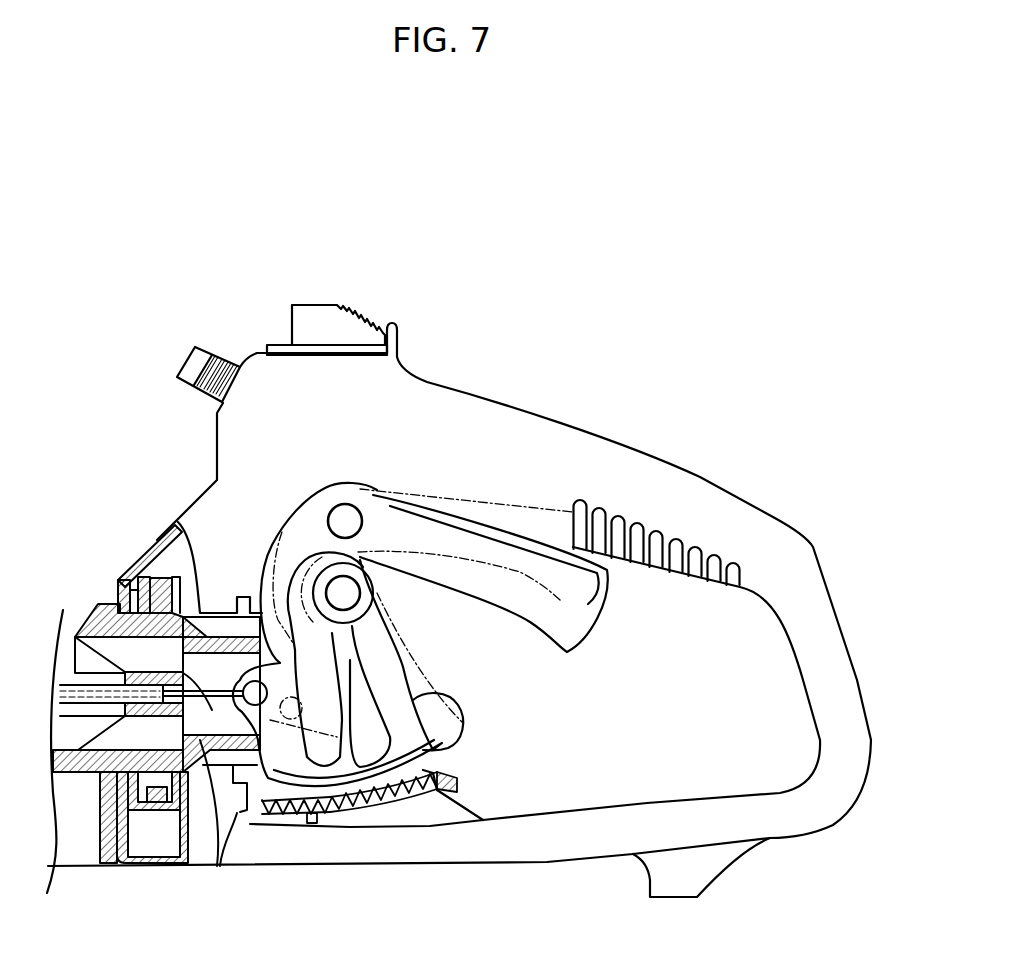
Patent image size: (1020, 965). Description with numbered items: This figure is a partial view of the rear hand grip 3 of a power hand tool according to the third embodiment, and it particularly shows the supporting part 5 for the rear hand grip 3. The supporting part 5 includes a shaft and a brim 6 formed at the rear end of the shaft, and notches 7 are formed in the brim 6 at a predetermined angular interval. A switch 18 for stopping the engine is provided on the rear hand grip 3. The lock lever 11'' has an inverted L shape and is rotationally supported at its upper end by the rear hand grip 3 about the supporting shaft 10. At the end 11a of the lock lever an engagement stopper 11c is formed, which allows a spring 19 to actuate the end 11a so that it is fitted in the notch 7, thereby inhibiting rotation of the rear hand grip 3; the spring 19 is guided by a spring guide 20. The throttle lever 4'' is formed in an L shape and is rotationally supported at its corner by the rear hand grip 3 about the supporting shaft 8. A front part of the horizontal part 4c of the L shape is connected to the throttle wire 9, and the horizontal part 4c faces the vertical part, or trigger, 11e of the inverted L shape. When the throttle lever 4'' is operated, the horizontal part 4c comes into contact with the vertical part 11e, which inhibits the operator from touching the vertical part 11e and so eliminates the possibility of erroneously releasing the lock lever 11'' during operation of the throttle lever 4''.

The rear hand grip 3 is at (771, 517).
The switch 18 is at (313, 308).
The supporting shaft 8 is at (347, 517).
The supporting shaft 10 is at (347, 593).
The brim 6 is at (210, 540).
The supporting part 5 is at (97, 604).
The throttle wire 9 is at (123, 671).
The throttle lever 4'' is at (510, 571).
The lock lever 11'' is at (378, 634).
The horizontal part 4c is at (425, 712).
The vertical part (trigger) 11e is at (417, 734).
The notch 7 is at (203, 765).
The end 11a is at (217, 866).
The engagement stopper 11c is at (243, 810).
The spring 19 is at (293, 800).
The spring guide 20 is at (380, 813).